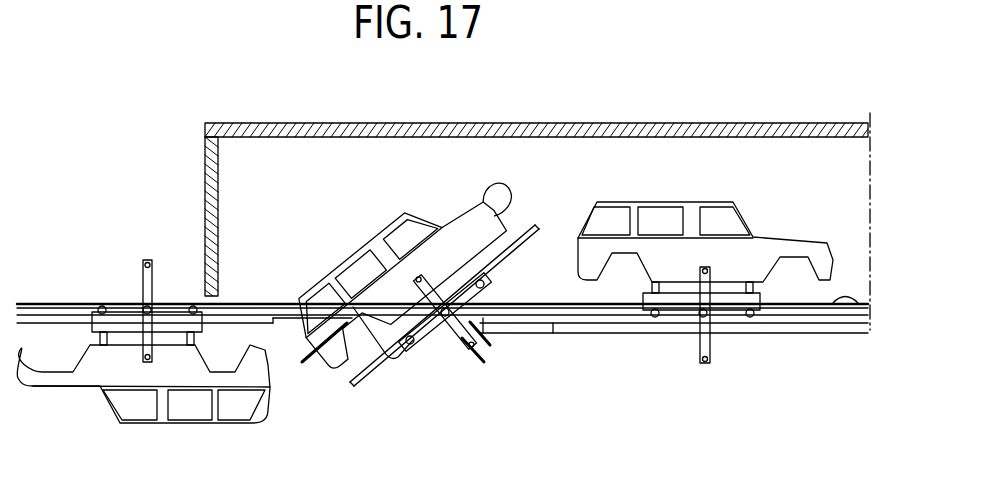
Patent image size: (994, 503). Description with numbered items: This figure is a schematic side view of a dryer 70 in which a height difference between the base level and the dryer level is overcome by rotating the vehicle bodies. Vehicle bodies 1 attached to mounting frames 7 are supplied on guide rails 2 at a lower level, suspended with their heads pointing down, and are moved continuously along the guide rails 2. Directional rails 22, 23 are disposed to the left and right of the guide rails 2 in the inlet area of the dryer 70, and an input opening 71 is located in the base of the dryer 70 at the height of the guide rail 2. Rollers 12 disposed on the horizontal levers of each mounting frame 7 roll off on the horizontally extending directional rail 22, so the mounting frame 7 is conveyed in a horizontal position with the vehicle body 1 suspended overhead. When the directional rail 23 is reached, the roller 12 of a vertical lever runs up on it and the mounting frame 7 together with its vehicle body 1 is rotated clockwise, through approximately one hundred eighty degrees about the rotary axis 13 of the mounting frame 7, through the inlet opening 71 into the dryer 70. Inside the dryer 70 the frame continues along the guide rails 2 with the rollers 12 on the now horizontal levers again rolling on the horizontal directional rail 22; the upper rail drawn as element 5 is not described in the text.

The vehicle body 1 is at (235, 423).
The guide rail 2 is at (53, 323).
The upper rail 5 is at (118, 302).
The mounting frame 7 is at (167, 306).
The roller 12 is at (147, 260).
The rotary axis 13 is at (158, 318).
The directional rail 22 is at (276, 325).
The directional rail 23 is at (310, 358).
The dryer 70 is at (290, 150).
The input opening 71 is at (486, 338).